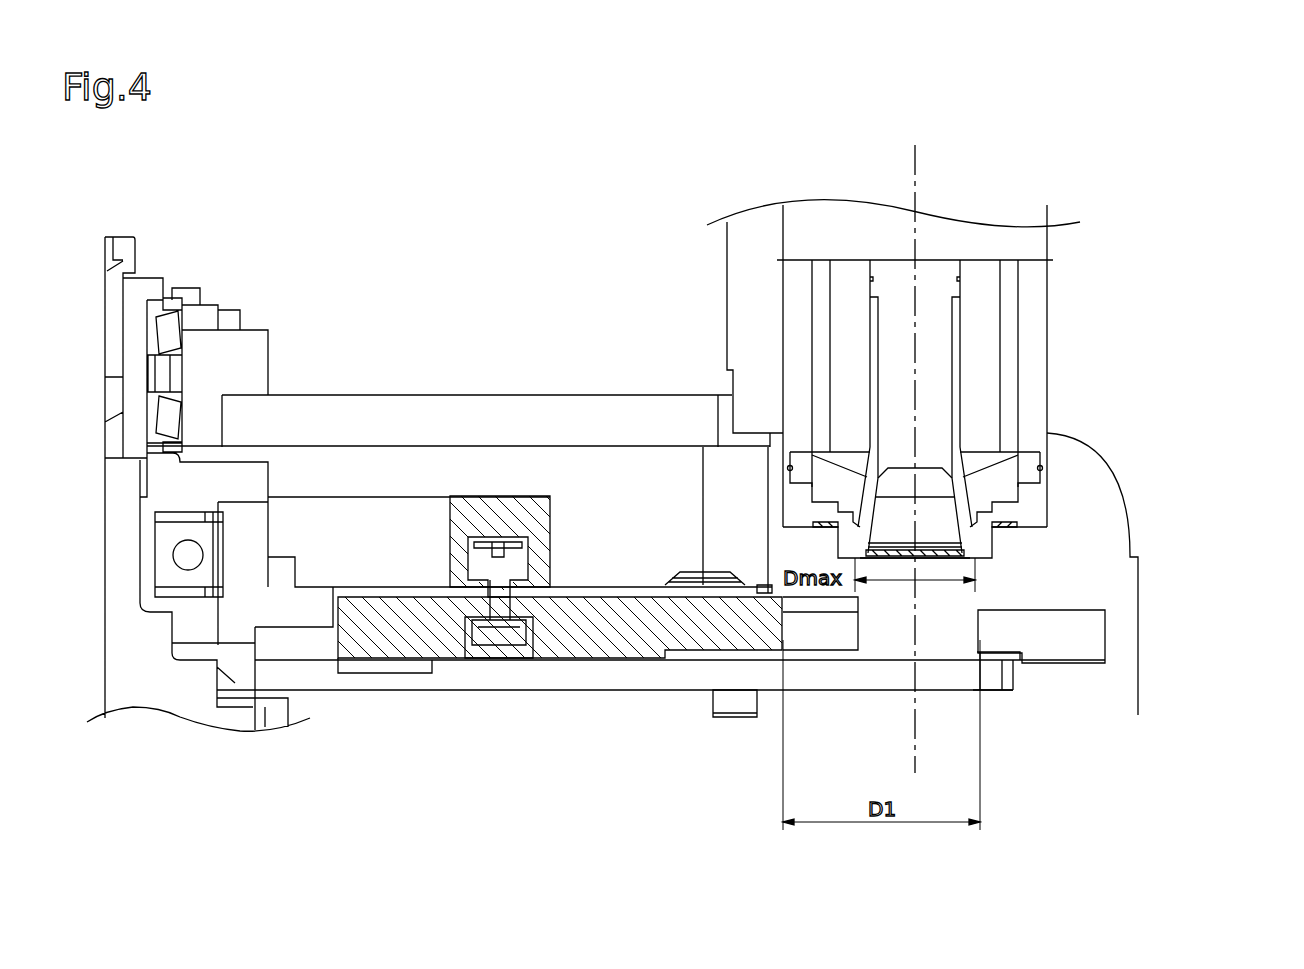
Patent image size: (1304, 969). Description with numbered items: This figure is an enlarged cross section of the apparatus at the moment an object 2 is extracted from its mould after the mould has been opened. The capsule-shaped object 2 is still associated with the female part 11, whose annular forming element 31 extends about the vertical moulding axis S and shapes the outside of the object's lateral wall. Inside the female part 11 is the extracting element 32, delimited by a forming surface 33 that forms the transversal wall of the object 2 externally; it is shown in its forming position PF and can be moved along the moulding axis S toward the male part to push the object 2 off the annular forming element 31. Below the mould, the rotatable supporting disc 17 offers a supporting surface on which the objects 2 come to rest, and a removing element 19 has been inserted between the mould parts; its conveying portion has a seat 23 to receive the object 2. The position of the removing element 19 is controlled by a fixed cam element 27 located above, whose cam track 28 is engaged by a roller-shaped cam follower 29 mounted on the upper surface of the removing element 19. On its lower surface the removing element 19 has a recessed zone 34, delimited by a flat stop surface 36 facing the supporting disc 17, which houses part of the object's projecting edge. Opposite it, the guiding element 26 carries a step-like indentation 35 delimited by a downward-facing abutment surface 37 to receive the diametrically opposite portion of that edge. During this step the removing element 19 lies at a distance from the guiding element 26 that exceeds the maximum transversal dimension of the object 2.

The object 2 is at (927, 518).
The female part 11 is at (990, 422).
The supporting disc 17 is at (647, 675).
The removing element 19 is at (597, 632).
The seat 23 is at (830, 632).
The guiding element 26 is at (1082, 638).
The cam element 27 is at (427, 493).
The cam track 28 is at (530, 560).
The cam follower 29 is at (465, 560).
The annular forming element 31 is at (973, 538).
The extracting element 32 is at (900, 395).
The forming surface 33 is at (905, 485).
The recessed zone 34 is at (700, 658).
The indentation 35 is at (998, 662).
The stop surface 36 is at (763, 640).
The abutment surface 37 is at (990, 662).
The moulding axis S is at (917, 178).
The forming position PF is at (1068, 509).